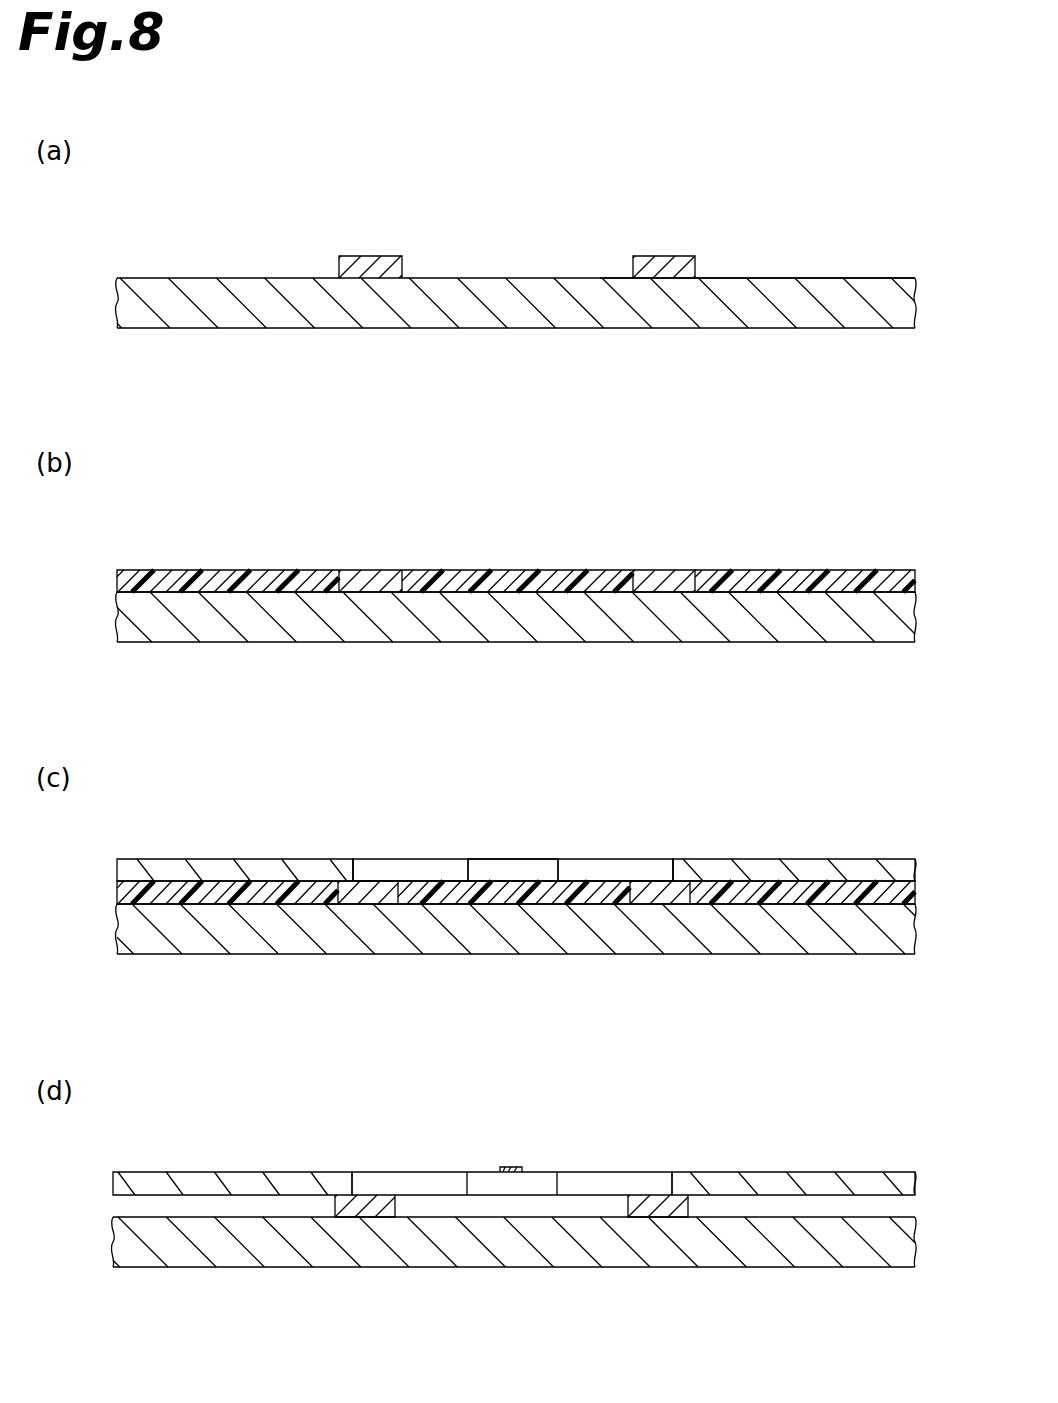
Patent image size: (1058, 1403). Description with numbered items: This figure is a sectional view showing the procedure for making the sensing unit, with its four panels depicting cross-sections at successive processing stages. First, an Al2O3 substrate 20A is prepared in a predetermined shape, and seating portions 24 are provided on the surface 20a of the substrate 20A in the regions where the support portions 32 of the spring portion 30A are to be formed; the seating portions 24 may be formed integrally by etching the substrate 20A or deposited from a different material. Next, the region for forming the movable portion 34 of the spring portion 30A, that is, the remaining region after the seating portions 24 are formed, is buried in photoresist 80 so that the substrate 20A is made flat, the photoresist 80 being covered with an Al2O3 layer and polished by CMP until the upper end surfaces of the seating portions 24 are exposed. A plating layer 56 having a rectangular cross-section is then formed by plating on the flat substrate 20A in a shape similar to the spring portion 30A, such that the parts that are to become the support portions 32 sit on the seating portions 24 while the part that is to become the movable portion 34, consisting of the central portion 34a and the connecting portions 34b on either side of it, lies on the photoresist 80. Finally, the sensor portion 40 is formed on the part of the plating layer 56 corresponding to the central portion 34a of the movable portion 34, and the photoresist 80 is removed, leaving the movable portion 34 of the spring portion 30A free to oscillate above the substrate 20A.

The substrate 20A is at (793, 315).
The surface of the substrate 20a is at (816, 278).
The seating portions 24 is at (367, 266).
The photoresist 80 is at (252, 580).
The support portions 32 is at (347, 868).
The movable portion 34 is at (656, 798).
The central portion 34a is at (514, 868).
The connecting portions 34b is at (411, 868).
The plating layer 56 is at (724, 858).
The spring portion 30A is at (722, 1171).
The sensor portion 40 is at (510, 1166).